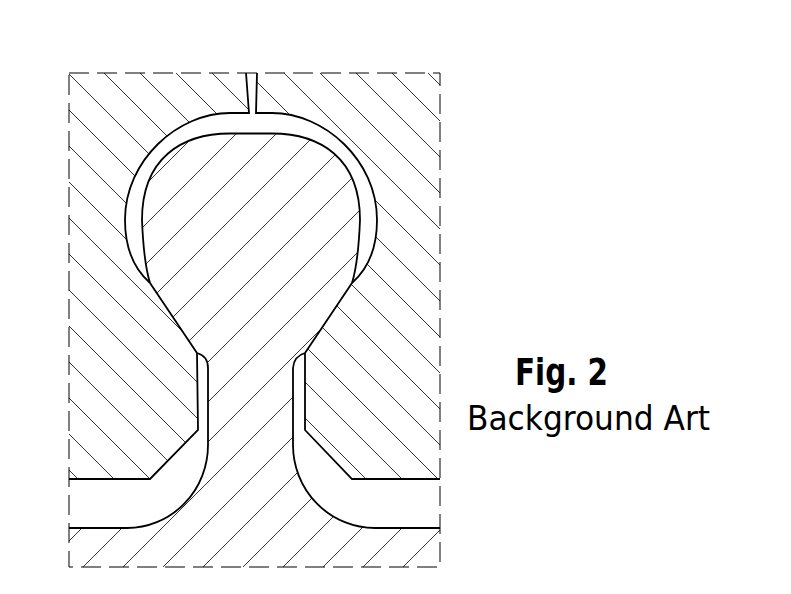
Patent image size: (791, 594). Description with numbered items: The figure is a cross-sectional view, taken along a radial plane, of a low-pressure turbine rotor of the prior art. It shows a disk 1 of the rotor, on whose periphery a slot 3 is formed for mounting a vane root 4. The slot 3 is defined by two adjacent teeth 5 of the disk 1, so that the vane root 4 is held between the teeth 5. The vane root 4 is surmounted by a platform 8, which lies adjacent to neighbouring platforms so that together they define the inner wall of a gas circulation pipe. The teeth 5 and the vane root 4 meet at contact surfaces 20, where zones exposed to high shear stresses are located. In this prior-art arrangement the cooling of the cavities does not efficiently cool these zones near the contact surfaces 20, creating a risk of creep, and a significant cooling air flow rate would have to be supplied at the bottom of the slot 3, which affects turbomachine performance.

The disk 1 is at (395, 551).
The slot 3 is at (113, 507).
The vane root 4 is at (118, 360).
The tooth 5 is at (317, 230).
The platform 8 is at (313, 92).
The contact surface 20 is at (167, 310).